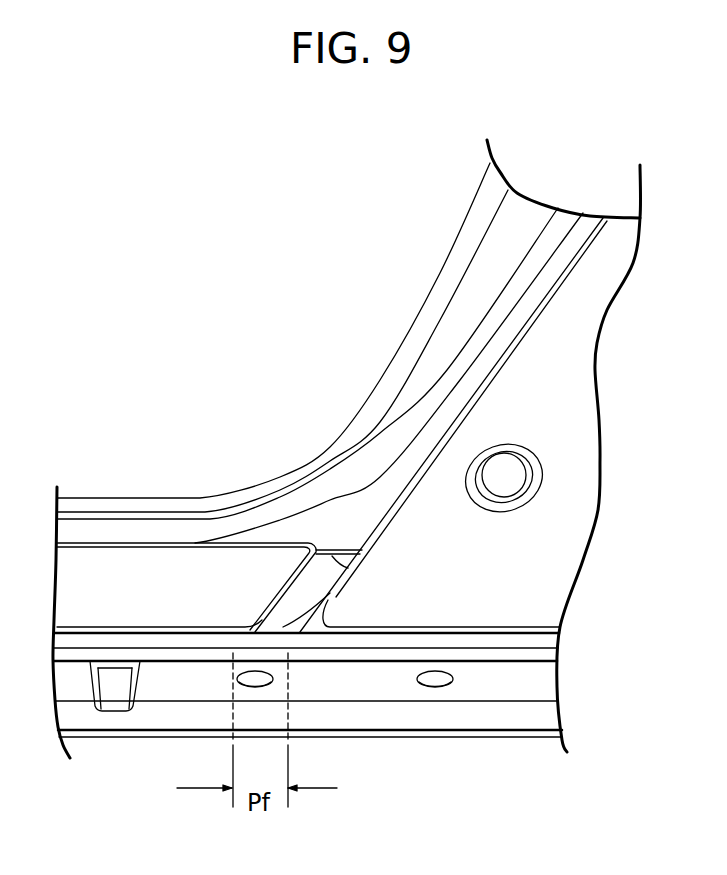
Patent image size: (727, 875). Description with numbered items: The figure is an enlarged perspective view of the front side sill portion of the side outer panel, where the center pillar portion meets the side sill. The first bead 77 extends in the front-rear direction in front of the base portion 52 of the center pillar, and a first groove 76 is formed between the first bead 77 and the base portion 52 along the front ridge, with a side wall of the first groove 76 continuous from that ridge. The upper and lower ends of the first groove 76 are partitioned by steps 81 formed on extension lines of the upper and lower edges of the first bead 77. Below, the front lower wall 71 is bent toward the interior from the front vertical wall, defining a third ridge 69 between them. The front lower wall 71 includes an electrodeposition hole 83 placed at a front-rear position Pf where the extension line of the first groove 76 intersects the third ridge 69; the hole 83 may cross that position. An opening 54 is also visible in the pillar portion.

The base portion 52 is at (483, 422).
The through hole 54 is at (507, 467).
The third ridge 69 is at (157, 648).
The front lower wall 71 is at (205, 687).
The first groove 76 is at (297, 573).
The first bead 77 is at (205, 540).
The step 81 is at (349, 569).
The electrodeposition hole 83 is at (255, 687).